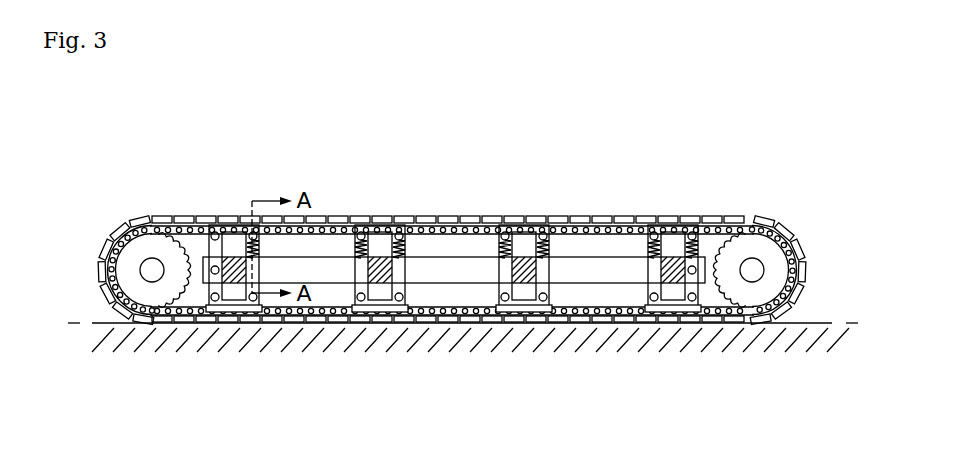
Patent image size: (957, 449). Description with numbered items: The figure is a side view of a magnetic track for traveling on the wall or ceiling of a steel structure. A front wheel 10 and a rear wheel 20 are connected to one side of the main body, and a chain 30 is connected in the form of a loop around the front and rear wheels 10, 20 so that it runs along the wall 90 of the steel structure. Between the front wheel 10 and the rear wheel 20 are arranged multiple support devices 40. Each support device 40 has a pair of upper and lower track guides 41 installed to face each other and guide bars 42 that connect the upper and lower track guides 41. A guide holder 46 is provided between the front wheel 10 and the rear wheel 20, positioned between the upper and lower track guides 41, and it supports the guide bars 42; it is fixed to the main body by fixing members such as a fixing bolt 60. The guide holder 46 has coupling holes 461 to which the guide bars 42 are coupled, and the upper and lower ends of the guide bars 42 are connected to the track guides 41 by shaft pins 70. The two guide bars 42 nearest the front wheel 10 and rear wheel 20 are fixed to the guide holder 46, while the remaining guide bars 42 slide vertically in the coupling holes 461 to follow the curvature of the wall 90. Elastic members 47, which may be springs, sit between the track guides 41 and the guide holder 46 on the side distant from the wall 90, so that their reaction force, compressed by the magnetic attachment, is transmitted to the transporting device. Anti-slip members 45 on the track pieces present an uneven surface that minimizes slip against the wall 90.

The front wheel 10 is at (130, 240).
The rear wheel 20 is at (765, 223).
The chain 30 is at (150, 236).
The support device 40 is at (454, 207).
The track guide 41 is at (526, 226).
The guide bar 42 is at (197, 224).
The anti-slip member 45 is at (498, 243).
The guide holder 46 is at (437, 272).
The elastic member 47 is at (500, 250).
The coupling hole 461 is at (250, 288).
The fixing bolt 60 is at (212, 276).
The shaft pin 70 is at (213, 232).
The wall 90 is at (806, 336).